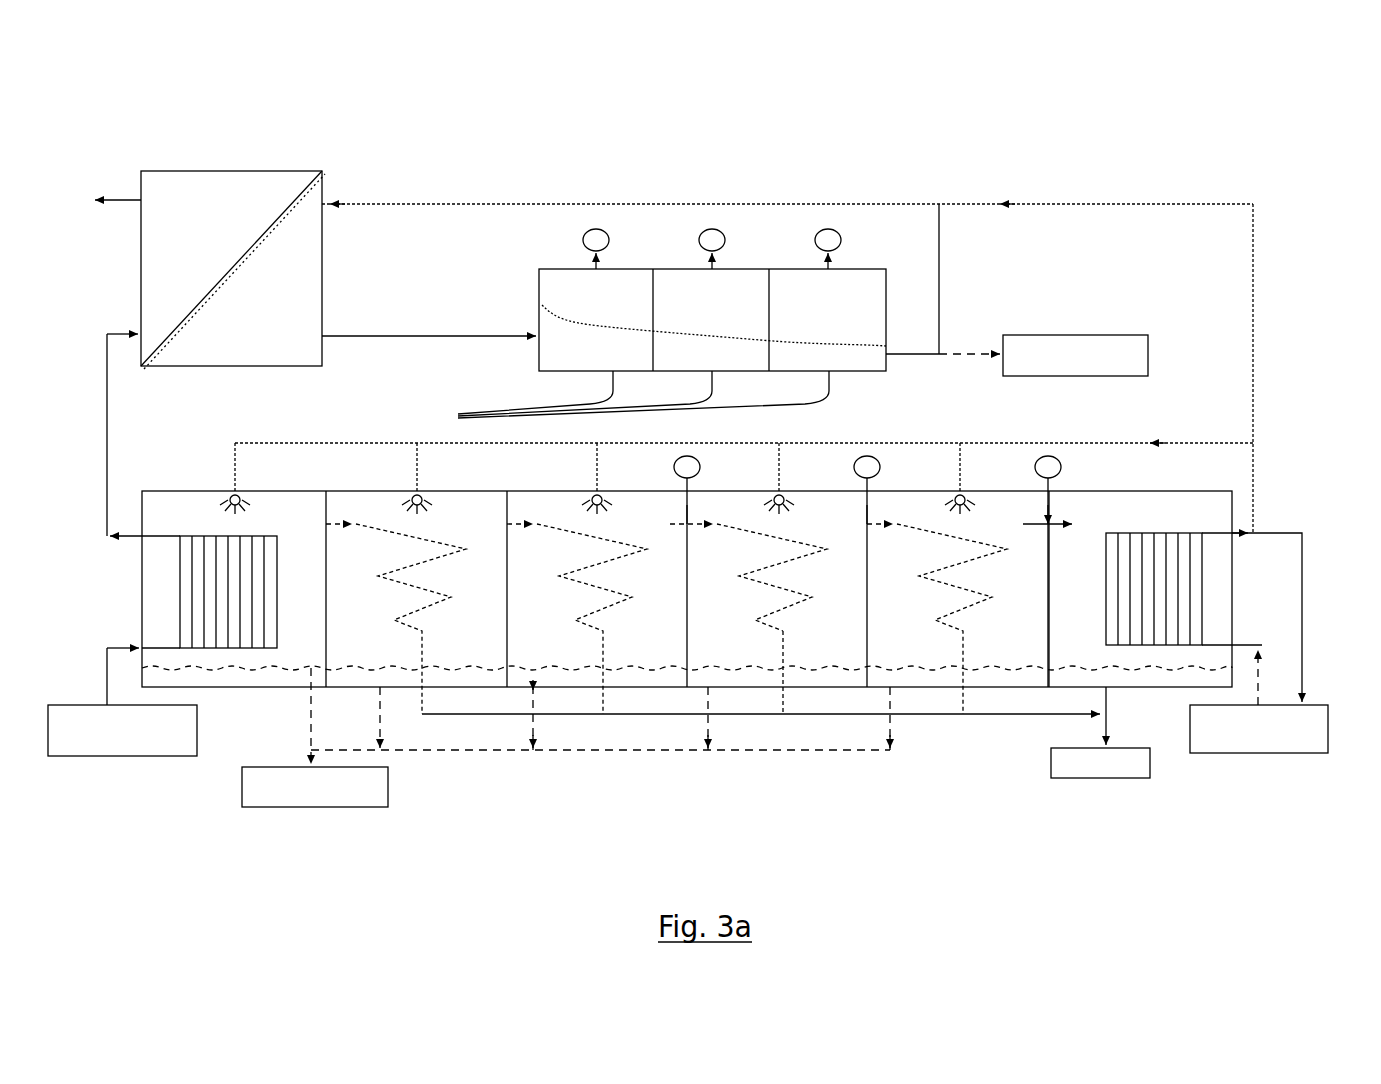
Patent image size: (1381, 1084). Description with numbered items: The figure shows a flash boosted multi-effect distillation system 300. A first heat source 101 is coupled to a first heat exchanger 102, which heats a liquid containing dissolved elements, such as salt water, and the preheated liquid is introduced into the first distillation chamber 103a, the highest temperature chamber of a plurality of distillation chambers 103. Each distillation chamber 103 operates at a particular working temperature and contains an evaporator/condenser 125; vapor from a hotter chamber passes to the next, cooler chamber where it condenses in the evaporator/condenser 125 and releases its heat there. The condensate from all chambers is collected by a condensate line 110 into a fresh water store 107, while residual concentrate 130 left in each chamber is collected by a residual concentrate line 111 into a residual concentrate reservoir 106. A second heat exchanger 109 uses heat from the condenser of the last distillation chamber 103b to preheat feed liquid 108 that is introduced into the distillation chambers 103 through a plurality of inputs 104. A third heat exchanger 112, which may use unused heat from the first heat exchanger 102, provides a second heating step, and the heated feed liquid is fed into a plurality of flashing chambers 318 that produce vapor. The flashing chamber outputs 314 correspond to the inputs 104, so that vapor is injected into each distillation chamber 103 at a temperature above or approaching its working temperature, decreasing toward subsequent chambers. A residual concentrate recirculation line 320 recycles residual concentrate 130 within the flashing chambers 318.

The system 300 is at (681, 70).
The third heat exchanger 112 is at (166, 171).
The residual concentrate 130 is at (558, 337).
The flashing chamber outputs 314 is at (815, 238).
The residual concentrate recirculation line 320 is at (939, 277).
The flashing chambers 318 is at (621, 398).
The residual concentrate reservoir 106 is at (695, 571).
The inputs 104 is at (687, 454).
The distillation chambers 103 is at (378, 598).
The first distillation chamber 103a is at (208, 512).
The last distillation chamber 103b is at (1138, 506).
The first heat exchanger 102 is at (142, 608).
The second heat exchanger 109 is at (1205, 610).
The first heat source 101 is at (122, 730).
The fresh water store 107 is at (1100, 732).
The feed liquid 108 is at (1259, 729).
The condensate line 110 is at (963, 714).
The residual concentrate line 111 is at (416, 748).
The evaporator/condenser 125 is at (783, 640).